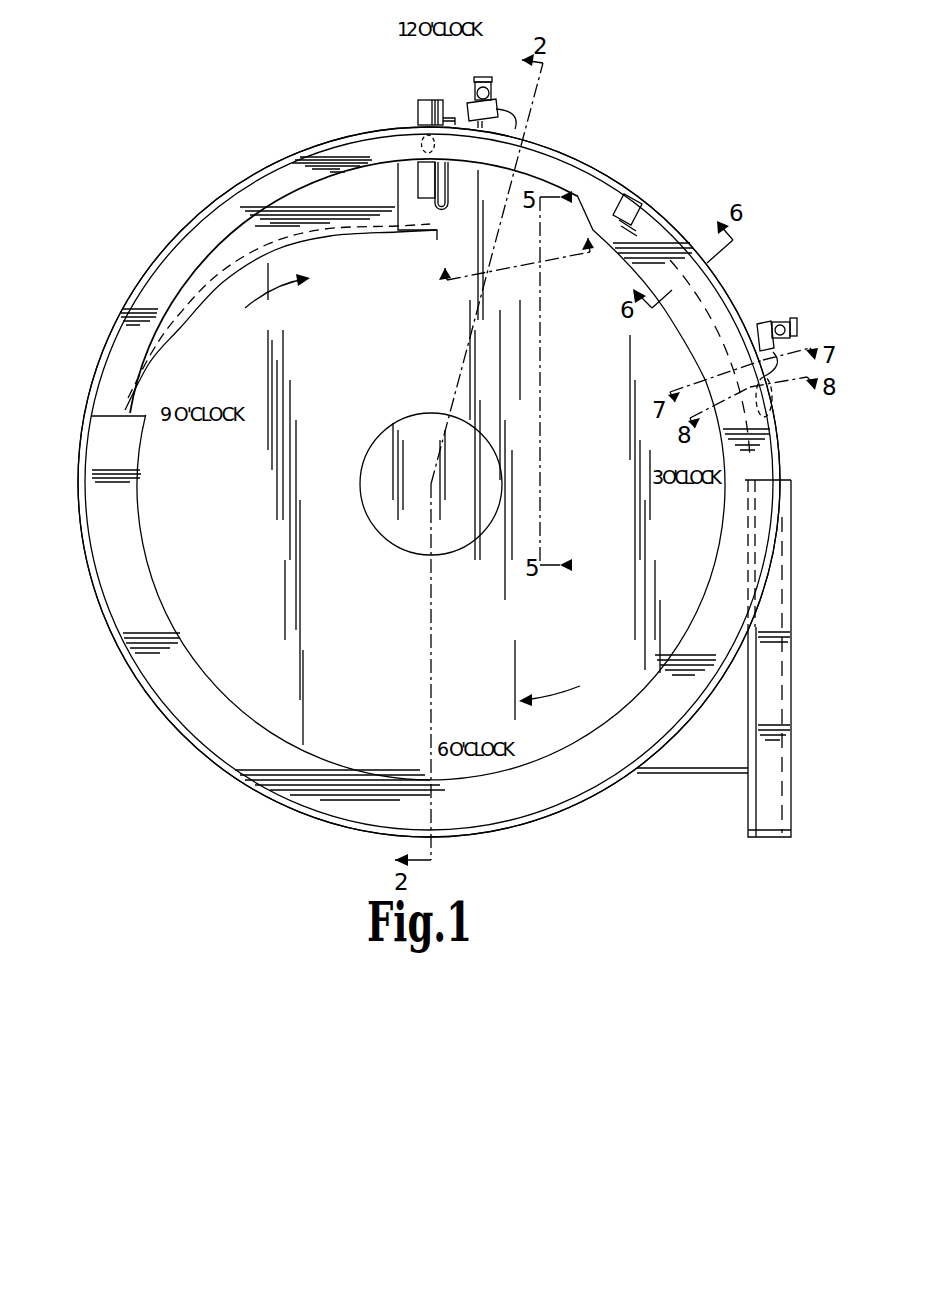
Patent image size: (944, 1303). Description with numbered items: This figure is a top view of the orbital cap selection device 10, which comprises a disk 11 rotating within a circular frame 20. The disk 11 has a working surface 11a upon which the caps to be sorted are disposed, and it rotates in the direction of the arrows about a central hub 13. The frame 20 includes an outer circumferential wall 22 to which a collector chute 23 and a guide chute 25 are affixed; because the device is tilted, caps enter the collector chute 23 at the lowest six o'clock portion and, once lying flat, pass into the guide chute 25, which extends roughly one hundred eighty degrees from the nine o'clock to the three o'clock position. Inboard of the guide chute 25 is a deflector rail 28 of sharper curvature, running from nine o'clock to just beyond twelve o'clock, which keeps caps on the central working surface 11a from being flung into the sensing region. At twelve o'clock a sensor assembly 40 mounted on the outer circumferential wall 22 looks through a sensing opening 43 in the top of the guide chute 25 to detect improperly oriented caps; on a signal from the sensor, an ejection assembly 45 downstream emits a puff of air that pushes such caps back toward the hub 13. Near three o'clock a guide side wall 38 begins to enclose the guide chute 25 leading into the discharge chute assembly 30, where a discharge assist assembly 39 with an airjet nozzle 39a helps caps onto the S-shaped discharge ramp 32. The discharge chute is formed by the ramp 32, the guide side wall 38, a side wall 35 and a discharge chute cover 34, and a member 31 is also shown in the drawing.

The orbital cap selection device 10 is at (154, 226).
The disk 11 is at (272, 712).
The working surface 11a is at (247, 485).
The hub 13 is at (372, 505).
The frame 20 is at (70, 523).
The outer circumferential wall 22 is at (98, 606).
The collector chute 23 is at (190, 712).
The guide chute 25 is at (100, 362).
The deflector rail 28 is at (430, 242).
The discharge chute assembly 30 is at (800, 476).
The horizontal bracket arm 31 is at (693, 774).
The discharge ramp 32 is at (758, 840).
The discharge chute cover 34 is at (790, 522).
The side wall 35 is at (790, 598).
The guide side wall 38 is at (634, 214).
The discharge assist assembly 39 is at (785, 312).
The airjet nozzle 39a is at (770, 406).
The sensor assembly 40 is at (425, 170).
The sensing opening 43 is at (424, 135).
The ejection assembly 45 is at (492, 96).